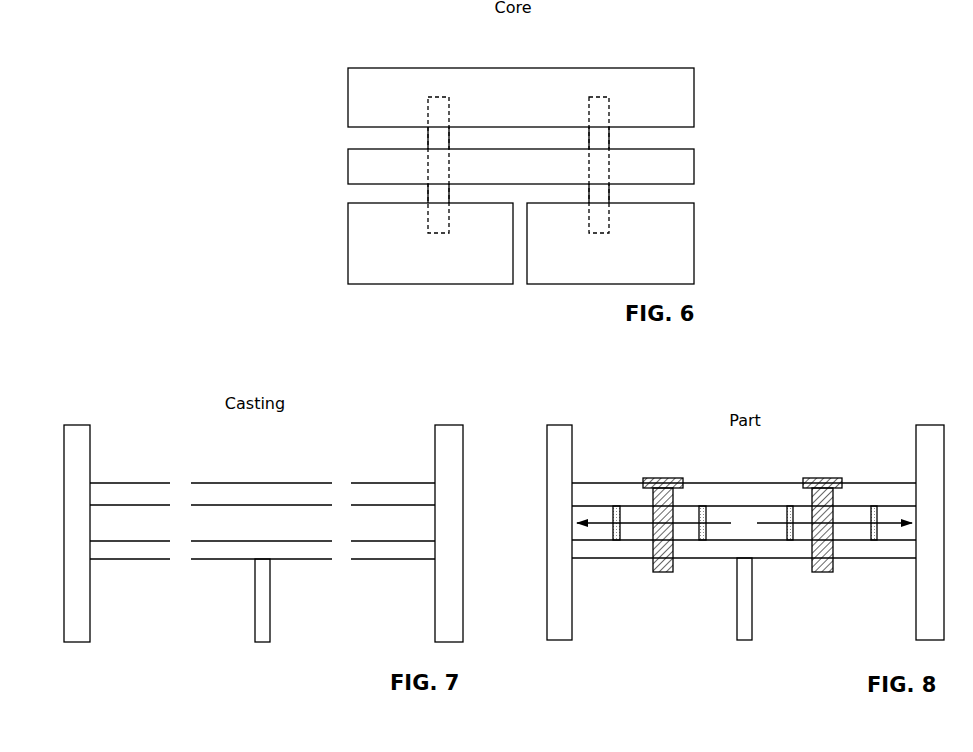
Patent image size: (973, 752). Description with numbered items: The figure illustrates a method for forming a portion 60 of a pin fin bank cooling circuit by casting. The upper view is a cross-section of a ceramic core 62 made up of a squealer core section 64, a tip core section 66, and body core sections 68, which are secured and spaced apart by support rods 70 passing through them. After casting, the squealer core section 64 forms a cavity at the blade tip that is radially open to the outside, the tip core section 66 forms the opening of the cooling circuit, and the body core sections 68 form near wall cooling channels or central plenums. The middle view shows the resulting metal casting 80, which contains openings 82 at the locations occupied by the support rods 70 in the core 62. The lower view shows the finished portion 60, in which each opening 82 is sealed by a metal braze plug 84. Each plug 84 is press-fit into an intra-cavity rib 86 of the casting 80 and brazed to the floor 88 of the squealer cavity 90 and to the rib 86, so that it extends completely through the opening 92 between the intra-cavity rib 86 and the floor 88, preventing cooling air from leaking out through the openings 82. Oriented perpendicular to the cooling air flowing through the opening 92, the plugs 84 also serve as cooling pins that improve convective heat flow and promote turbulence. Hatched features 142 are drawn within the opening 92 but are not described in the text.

In FIG. 8, the portion of the pin fin bank cooling circuit 60 is at (745, 479).
In FIG. 6, the core 62 is at (476, 159).
In FIG. 6, the squealer core section 64 is at (694, 102).
In FIG. 6, the tip core section 66 is at (694, 173).
In FIG. 6, the body core section 68 is at (348, 238).
In FIG. 6, the support rods 70 is at (589, 141).
In FIG. 7, the metal casting 80 is at (263, 467).
In FIG. 7, the openings 82 is at (180, 478).
In FIG. 8, the plug 84 is at (663, 478).
In FIG. 8, the intra-cavity rib 86 is at (705, 563).
In FIG. 8, the floor of the squealer cavity 88 is at (720, 482).
In FIG. 8, the squealer cavity 90 is at (890, 445).
In FIG. 8, the opening 92 is at (744, 523).
In FIG. 8, the ribs 142 is at (617, 545).